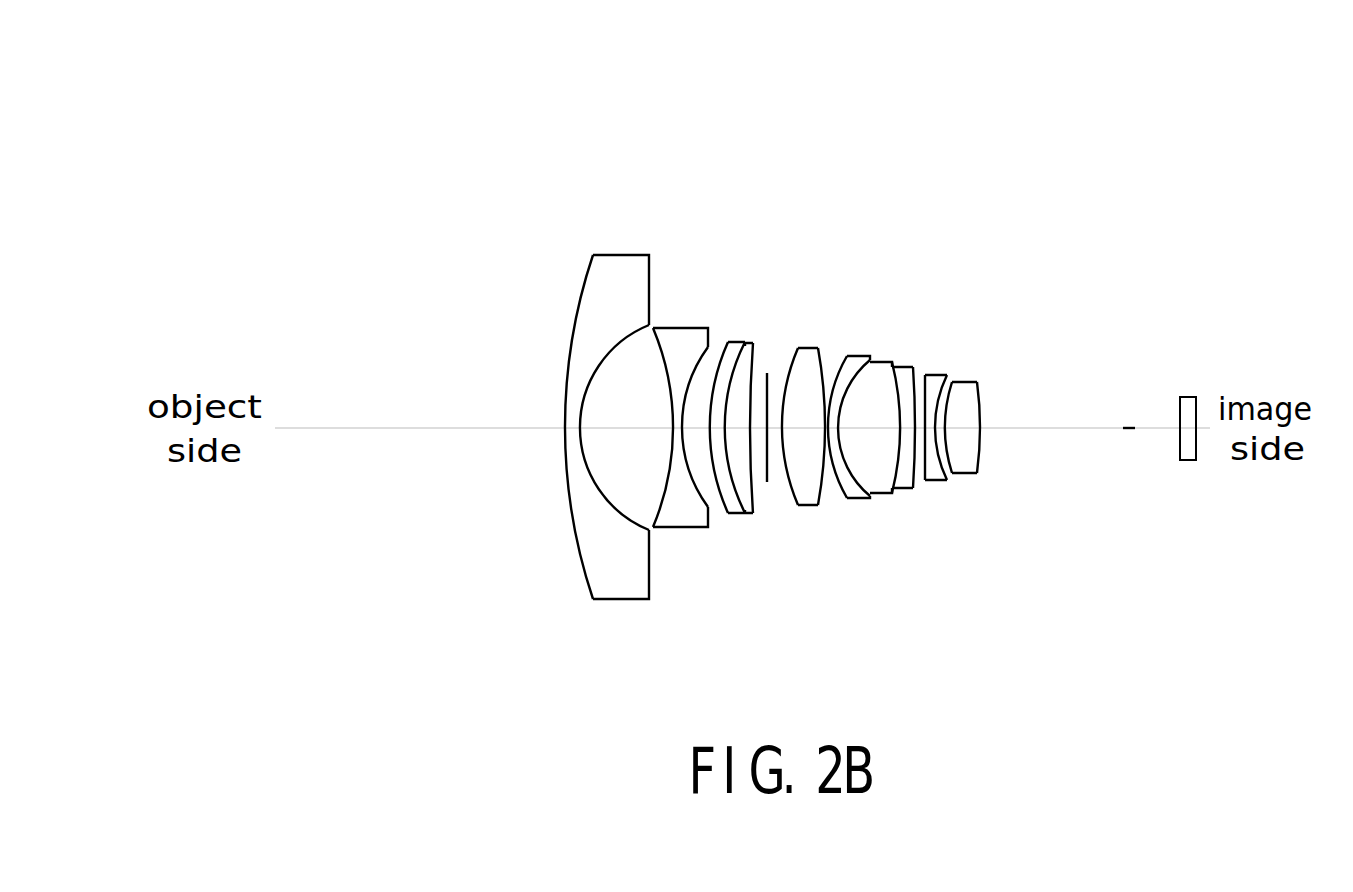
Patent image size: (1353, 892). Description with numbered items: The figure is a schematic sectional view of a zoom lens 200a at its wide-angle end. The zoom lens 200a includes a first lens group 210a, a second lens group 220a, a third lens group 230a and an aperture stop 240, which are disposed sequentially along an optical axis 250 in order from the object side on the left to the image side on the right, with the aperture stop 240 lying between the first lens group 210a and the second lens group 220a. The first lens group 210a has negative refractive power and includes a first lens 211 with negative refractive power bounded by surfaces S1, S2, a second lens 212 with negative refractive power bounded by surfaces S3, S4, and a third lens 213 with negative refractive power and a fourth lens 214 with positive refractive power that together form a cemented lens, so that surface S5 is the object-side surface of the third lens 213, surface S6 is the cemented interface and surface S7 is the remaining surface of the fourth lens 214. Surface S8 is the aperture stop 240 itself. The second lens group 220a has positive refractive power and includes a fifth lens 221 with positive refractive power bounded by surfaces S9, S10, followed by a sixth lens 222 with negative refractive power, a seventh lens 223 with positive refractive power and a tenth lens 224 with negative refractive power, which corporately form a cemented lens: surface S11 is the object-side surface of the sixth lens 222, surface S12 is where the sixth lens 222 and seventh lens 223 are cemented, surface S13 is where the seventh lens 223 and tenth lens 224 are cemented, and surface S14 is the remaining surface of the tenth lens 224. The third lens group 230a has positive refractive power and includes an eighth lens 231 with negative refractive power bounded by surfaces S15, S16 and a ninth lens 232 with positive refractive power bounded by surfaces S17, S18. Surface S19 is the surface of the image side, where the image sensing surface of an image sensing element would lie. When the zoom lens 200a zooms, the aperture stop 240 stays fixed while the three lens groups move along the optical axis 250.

The zoom lens 200a is at (742, 405).
The first lens group 210a is at (777, 118).
The first lens 211 is at (602, 435).
The second lens 212 is at (660, 437).
The third lens 213 is at (721, 406).
The fourth lens 214 is at (760, 395).
The second lens group 220a is at (993, 223).
The fifth lens 221 is at (823, 452).
The sixth lens 222 is at (880, 438).
The seventh lens 223 is at (921, 394).
The tenth lens 224 is at (967, 369).
The third lens group 230a is at (1120, 258).
The eighth lens 231 is at (992, 366).
The ninth lens 232 is at (1031, 434).
The aperture stop 240 is at (804, 342).
The optical axis 250 is at (412, 428).
The surface S1 is at (582, 565).
The surface S2 is at (620, 490).
The surface S3 is at (650, 498).
The surface S4 is at (695, 490).
The surface S5 is at (722, 512).
The surface S6 is at (738, 490).
The surface S7 is at (753, 482).
The surface S8 is at (762, 455).
The surface S9 is at (786, 492).
The surface S10 is at (831, 488).
The surface S11 is at (828, 480).
The surface S12 is at (851, 470).
The surface S13 is at (900, 464).
The surface S14 is at (921, 446).
The surface S15 is at (915, 403).
The surface S16 is at (935, 420).
The surface S17 is at (947, 467).
The surface S18 is at (978, 467).
The surface S19 is at (1180, 417).